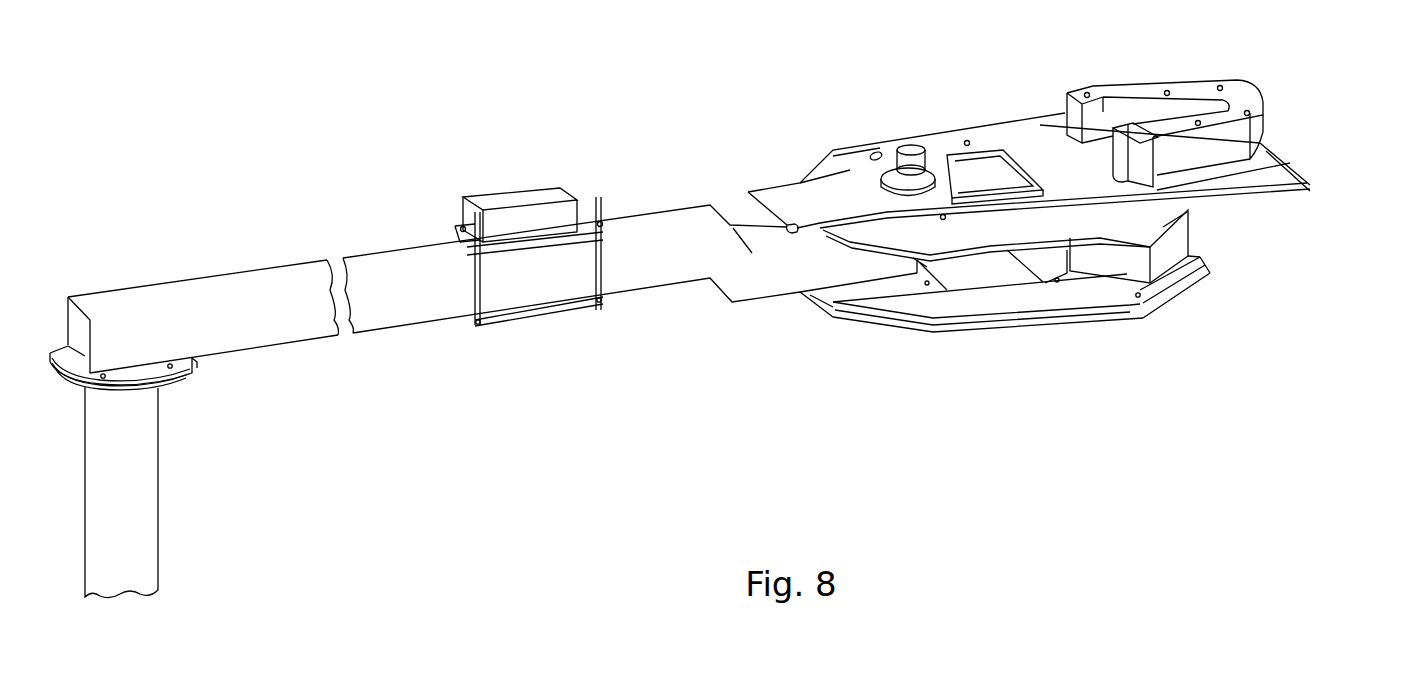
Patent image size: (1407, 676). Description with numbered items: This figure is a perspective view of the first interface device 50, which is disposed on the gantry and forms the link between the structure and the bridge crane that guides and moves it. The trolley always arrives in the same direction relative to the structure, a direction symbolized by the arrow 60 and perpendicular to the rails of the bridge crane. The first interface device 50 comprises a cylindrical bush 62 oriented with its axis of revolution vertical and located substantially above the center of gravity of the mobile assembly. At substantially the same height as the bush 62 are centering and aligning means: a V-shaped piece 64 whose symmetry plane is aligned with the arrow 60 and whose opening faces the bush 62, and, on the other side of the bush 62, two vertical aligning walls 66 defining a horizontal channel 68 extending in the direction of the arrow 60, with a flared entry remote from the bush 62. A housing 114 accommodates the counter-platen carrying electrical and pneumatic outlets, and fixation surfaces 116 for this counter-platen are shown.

The first interface device 50 is at (1030, 148).
The arrow 60 is at (548, 160).
The cylindrical bush 62 is at (868, 162).
The V-shaped piece 64 is at (1245, 102).
The vertical aligning walls 66 is at (485, 212).
The horizontal channel 68 is at (567, 193).
The housing 114 is at (958, 150).
The fixation surfaces 116 is at (988, 175).